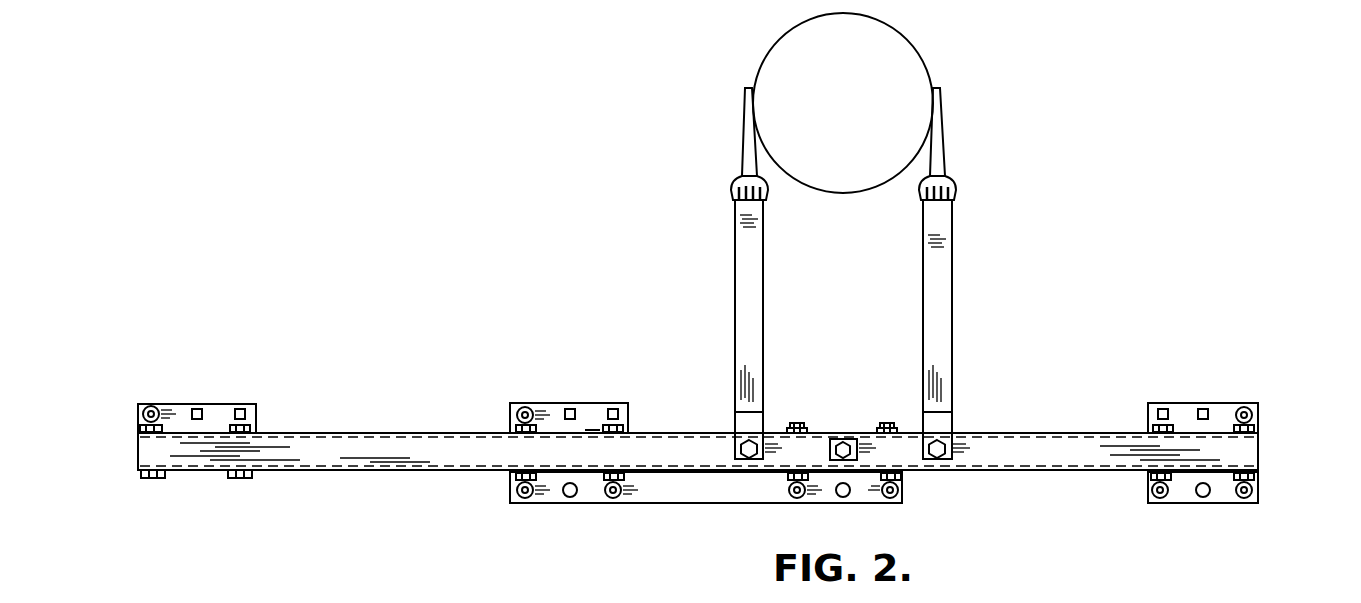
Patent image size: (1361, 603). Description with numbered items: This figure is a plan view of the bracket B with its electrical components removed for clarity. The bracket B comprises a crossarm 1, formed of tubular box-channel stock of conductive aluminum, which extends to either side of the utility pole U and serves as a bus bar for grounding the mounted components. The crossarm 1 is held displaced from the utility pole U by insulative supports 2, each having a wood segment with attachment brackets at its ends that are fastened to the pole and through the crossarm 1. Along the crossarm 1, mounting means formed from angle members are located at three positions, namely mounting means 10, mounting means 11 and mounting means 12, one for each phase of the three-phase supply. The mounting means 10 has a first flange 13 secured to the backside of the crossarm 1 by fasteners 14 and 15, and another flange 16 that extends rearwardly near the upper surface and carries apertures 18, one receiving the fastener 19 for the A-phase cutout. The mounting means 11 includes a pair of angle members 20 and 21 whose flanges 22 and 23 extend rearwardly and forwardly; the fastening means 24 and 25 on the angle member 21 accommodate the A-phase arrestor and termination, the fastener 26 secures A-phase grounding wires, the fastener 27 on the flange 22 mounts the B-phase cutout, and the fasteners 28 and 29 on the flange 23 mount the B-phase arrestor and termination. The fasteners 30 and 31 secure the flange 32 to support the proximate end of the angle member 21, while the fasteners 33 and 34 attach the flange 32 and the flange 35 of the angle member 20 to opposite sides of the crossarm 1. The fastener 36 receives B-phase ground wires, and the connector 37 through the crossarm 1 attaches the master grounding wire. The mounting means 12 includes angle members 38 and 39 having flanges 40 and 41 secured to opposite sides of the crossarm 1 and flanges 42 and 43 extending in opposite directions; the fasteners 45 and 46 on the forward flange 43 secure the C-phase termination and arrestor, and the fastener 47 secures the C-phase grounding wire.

The crossarm 1 is at (1043, 432).
The supports 2 is at (858, 273).
The mounting means 10 is at (199, 452).
The mounting means 11 is at (695, 450).
The mounting means 12 is at (1217, 457).
The first flange 13 is at (205, 433).
The fastener 14 is at (148, 479).
The fastener 15 is at (240, 479).
The flange 16 is at (186, 404).
The apertures 18 is at (138, 422).
The fastener 19 is at (149, 410).
The angle member 20 is at (511, 404).
The angle member 21 is at (510, 500).
The second flange 22 is at (571, 403).
The second flange 23 is at (670, 503).
The fastening means 24 is at (526, 499).
The fastening means 25 is at (602, 499).
The fastener 26 is at (571, 497).
The fastener 27 is at (525, 407).
The fastener 28 is at (805, 498).
The fastener 29 is at (898, 503).
The fastener 30 is at (803, 423).
The fastener 31 is at (893, 423).
The flange 32 is at (730, 474).
The fastener 33 is at (514, 429).
The fastener 34 is at (625, 426).
The flange 35 is at (593, 432).
The fastener 36 is at (848, 496).
The connector 37 is at (845, 440).
The angle member 38 is at (1260, 414).
The angle member 39 is at (1260, 481).
The flange 40 is at (1216, 428).
The flange 41 is at (1225, 500).
The flange 42 is at (1150, 405).
The flange 43 is at (1150, 500).
The fastener 45 is at (1172, 503).
The fastener 46 is at (1259, 500).
The fastener 47 is at (1203, 497).
The utility pole U is at (760, 64).
The bracket B is at (981, 371).